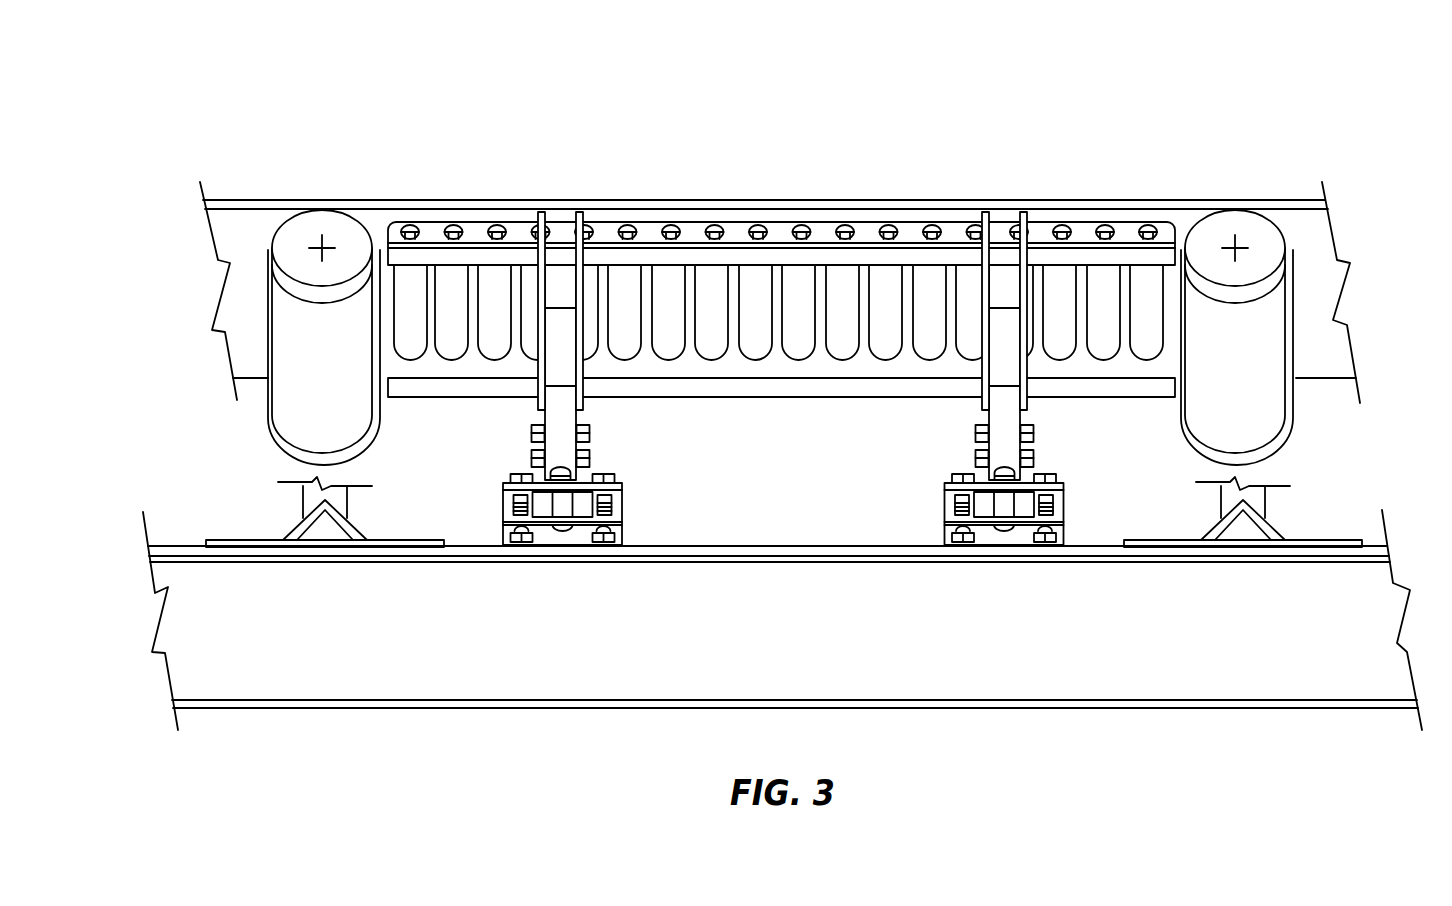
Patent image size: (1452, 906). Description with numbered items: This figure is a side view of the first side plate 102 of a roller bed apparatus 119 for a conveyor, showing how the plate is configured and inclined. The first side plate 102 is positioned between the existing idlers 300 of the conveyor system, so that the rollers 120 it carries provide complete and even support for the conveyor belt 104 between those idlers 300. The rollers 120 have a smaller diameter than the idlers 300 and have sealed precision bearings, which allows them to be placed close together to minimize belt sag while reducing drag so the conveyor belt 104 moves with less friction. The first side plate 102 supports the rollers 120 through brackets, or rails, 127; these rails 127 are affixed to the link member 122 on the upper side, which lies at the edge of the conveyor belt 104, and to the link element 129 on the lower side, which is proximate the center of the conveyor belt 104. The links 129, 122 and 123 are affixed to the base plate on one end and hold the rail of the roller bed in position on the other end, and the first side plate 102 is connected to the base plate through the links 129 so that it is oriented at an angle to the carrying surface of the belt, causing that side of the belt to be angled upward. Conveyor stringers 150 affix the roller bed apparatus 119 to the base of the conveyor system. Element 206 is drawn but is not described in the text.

The first side plate 102 is at (795, 105).
The conveyor belt 104 is at (672, 200).
The brackets 127 is at (868, 232).
The rollers 120 is at (630, 343).
The links 129 is at (840, 397).
The link member 122 is at (556, 363).
The link 123 is at (568, 418).
The roller bed apparatus 119 is at (608, 444).
The base clamp block 206 is at (503, 495).
The idlers 300 is at (298, 225).
The conveyor stringers 150 is at (1095, 660).